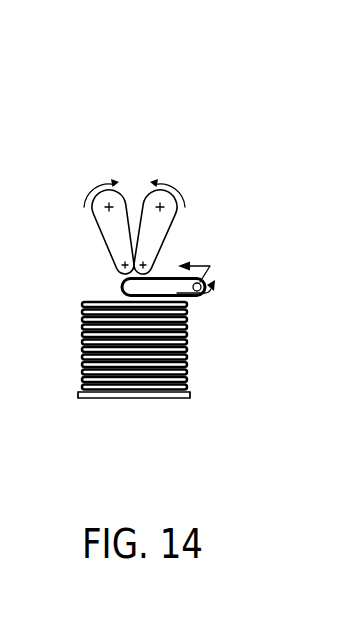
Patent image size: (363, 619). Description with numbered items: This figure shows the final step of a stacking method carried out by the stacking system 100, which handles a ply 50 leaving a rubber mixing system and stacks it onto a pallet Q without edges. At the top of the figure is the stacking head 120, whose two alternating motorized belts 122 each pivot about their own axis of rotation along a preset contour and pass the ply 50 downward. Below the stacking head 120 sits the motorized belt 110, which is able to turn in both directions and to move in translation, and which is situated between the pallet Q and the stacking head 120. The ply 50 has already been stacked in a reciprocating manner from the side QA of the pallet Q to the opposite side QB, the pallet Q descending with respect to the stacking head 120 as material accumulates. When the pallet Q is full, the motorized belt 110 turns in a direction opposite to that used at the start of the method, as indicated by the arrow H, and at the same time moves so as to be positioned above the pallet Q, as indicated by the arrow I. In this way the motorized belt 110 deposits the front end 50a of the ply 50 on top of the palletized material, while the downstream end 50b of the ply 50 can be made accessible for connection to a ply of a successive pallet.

The stacking system 100 is at (112, 100).
The stacking head 120 is at (93, 214).
The alternating motorized belts 122 is at (118, 192).
The motorized belt 110 is at (122, 287).
The ply 50 is at (188, 333).
The front end of the ply 50a is at (160, 279).
The downstream end of the ply 50b is at (82, 303).
The arrow I is at (194, 260).
The arrow H is at (200, 300).
The pallet Q is at (133, 398).
The side of the pallet QA is at (78, 397).
The opposite side of the pallet QB is at (190, 397).